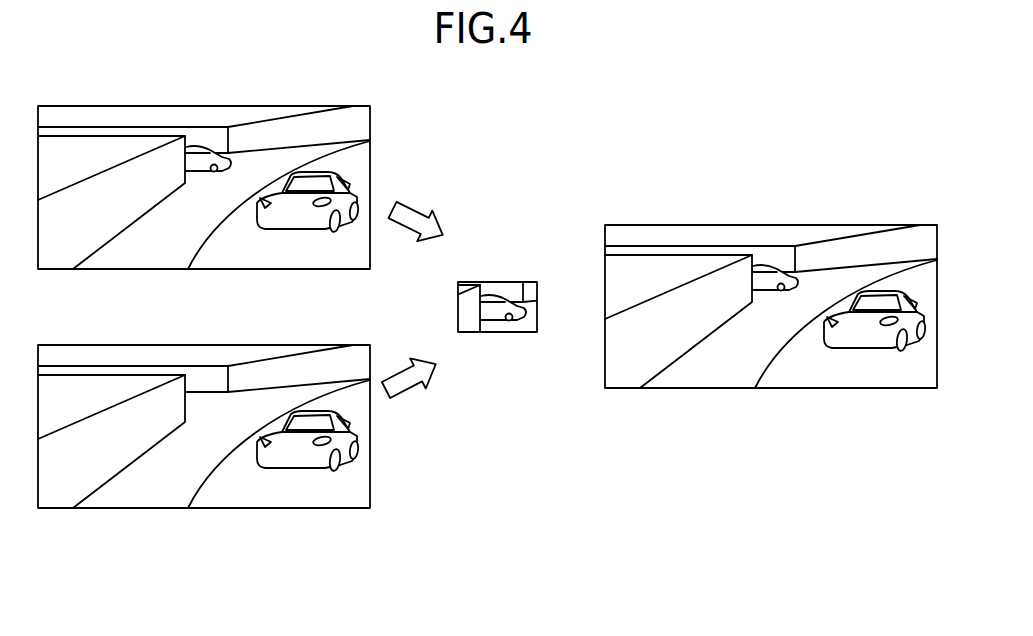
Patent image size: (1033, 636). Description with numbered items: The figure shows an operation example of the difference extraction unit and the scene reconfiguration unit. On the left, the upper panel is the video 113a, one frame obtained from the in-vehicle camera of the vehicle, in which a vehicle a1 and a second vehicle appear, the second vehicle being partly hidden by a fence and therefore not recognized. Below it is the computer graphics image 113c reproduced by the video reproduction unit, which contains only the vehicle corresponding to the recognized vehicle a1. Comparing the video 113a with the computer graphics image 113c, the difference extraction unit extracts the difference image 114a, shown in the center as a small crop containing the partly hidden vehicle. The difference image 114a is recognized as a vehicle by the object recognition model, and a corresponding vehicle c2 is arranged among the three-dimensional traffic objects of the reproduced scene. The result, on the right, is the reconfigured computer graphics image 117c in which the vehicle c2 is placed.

The video frame 113a is at (204, 168).
The computer graphics image 113c is at (204, 407).
The difference image 114a is at (499, 321).
The reconfigured computer graphics image 117c is at (771, 285).
The vehicle a1 is at (293, 233).
The vehicle c2 is at (778, 299).